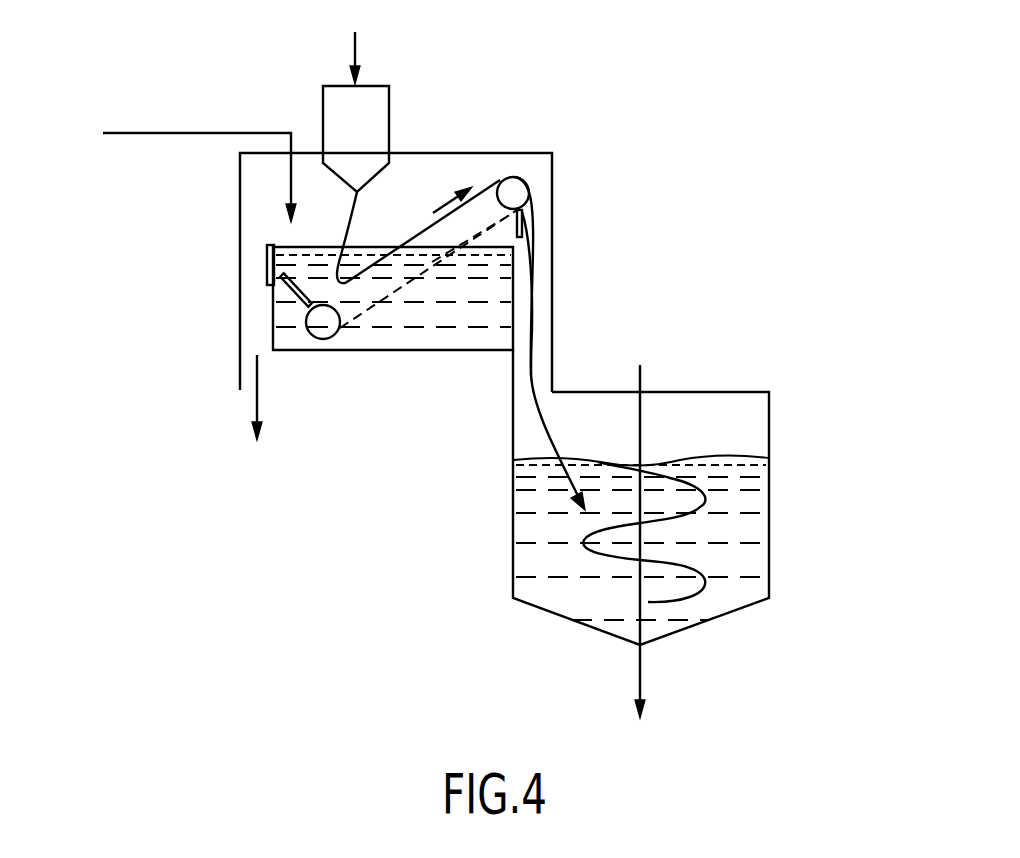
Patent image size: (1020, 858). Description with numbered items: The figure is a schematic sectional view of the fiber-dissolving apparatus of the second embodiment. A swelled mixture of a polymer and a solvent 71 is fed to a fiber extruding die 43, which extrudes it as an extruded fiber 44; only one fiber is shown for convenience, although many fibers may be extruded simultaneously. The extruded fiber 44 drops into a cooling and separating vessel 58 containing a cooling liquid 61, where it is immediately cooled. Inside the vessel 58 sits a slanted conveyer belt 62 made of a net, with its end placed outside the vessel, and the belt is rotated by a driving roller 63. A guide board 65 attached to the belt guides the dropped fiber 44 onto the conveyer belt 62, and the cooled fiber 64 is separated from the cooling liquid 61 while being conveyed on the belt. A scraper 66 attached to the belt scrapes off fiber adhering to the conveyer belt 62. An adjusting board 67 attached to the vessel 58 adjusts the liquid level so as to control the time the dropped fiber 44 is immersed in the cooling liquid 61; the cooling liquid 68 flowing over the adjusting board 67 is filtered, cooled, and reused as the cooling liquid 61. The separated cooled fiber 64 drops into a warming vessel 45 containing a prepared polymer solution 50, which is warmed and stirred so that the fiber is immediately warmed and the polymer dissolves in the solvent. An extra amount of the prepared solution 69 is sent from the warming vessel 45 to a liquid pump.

The cooling liquid 61 is at (142, 133).
The swelled mixture of a polymer and a solvent 71 is at (357, 47).
The fiber extruding die 43 is at (389, 115).
The extruded fiber 44 is at (345, 213).
The cooling and separating vessel 58 is at (410, 351).
The adjusting board 67 is at (273, 272).
The guide board 65 is at (300, 300).
The conveyer belt 62 is at (443, 262).
The driving roller 63 is at (515, 182).
The scraper 66 is at (523, 222).
The cooled fiber 64 is at (532, 202).
The cooling liquid 68 is at (257, 402).
The warming vessel 45 is at (770, 472).
The prepared polymer solution 50 is at (743, 555).
The prepared solution 69 is at (638, 678).